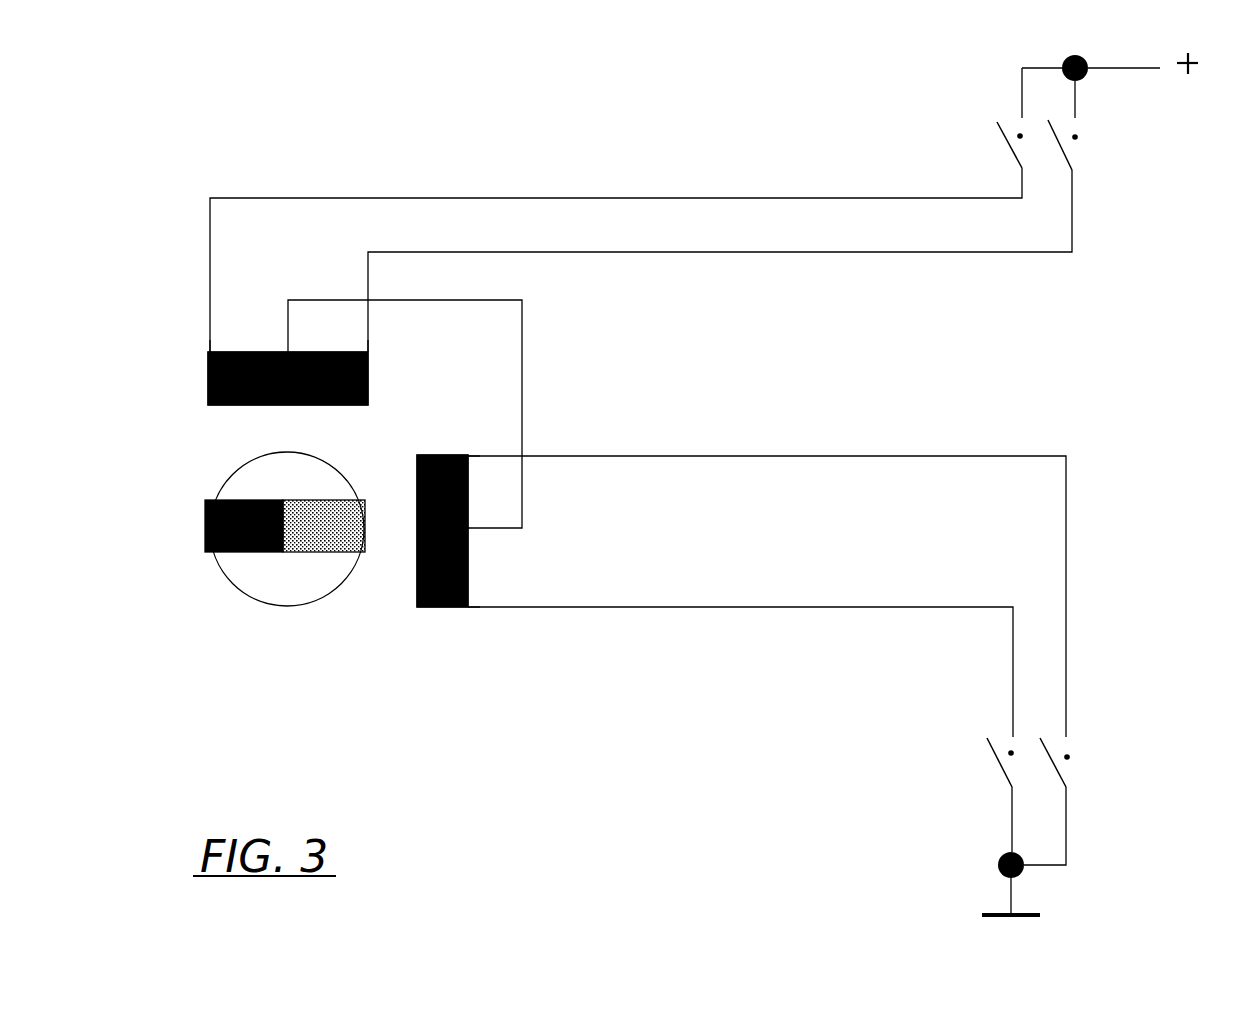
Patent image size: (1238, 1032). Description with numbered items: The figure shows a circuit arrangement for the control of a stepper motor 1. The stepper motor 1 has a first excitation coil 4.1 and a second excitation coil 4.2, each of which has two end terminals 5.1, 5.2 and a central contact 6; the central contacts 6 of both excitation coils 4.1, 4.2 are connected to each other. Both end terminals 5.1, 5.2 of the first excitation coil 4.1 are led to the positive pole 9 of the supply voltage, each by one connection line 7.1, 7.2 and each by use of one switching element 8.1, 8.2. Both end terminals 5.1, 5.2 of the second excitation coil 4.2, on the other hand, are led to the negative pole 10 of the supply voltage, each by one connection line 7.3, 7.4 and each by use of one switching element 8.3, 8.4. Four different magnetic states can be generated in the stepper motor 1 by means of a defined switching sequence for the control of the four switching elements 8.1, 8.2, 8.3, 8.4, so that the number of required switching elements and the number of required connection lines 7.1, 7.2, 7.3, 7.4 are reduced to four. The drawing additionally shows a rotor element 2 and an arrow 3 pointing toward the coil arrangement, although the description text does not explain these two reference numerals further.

The stepper motor 1 is at (216, 115).
The permanent magnet 2 is at (263, 563).
The coil arrangement 3 is at (206, 434).
The first excitation coil 4.1 is at (200, 388).
The second excitation coil 4.2 is at (420, 617).
The end terminal 5.1 is at (200, 353).
The end terminal 5.2 is at (375, 351).
The central contact 6 is at (282, 346).
The connection line 7.1 is at (608, 188).
The connection line 7.2 is at (720, 260).
The connection line 7.3 is at (733, 452).
The connection line 7.4 is at (699, 599).
The switching element 8.1 is at (1015, 134).
The switching element 8.2 is at (1080, 142).
The switching element 8.3 is at (1072, 758).
The switching element 8.4 is at (1006, 748).
The positive pole 9 is at (1110, 55).
The negative pole 10 is at (1035, 887).